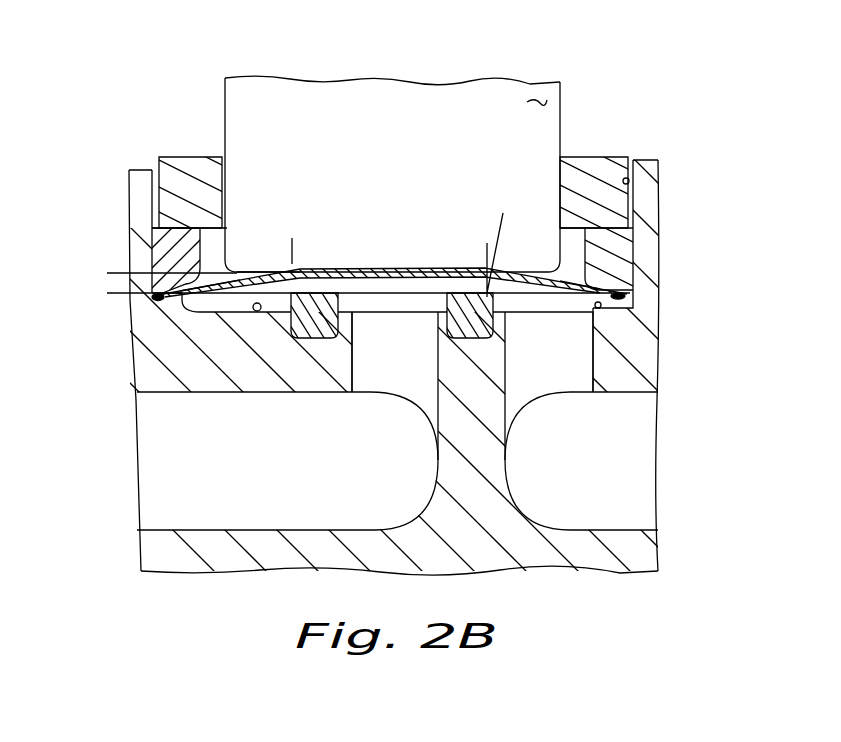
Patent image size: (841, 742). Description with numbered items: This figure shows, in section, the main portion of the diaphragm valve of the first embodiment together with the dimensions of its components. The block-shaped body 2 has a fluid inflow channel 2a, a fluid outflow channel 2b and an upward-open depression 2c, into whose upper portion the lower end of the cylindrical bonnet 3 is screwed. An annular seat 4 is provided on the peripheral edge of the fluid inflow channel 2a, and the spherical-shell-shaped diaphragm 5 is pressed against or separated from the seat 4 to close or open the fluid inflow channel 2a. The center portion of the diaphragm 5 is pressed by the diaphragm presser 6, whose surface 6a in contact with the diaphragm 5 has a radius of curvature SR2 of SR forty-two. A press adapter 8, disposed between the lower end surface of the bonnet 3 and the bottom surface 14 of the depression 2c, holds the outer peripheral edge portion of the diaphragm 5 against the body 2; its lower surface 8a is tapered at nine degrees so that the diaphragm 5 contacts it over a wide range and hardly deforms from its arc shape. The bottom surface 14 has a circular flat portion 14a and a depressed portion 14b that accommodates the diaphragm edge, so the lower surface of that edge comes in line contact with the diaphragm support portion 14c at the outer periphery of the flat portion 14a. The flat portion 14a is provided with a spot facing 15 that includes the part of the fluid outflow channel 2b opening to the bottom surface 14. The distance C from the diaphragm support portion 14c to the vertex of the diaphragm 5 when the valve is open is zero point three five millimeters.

The body 2 is at (612, 552).
The fluid inflow channel 2a is at (353, 362).
The fluid outflow channel 2b is at (593, 358).
The depression 2c is at (634, 173).
The bonnet 3 is at (587, 167).
The seat 4 is at (322, 332).
The diaphragm 5 is at (600, 272).
The diaphragm presser 6 is at (557, 94).
The surface of the diaphragm presser 6a is at (242, 262).
The press adapter 8 is at (152, 231).
The lower surface of the press adapter 8a is at (153, 299).
The bottom surface of the depression 14 is at (258, 311).
The flat portion 14a is at (226, 292).
The depressed portion 14b is at (632, 297).
The diaphragm support portion 14c is at (620, 284).
The spot facing 15 is at (645, 326).
The radius of curvature of the diaphragm presser surface SR2 is at (299, 266).
The distance C is at (117, 273).